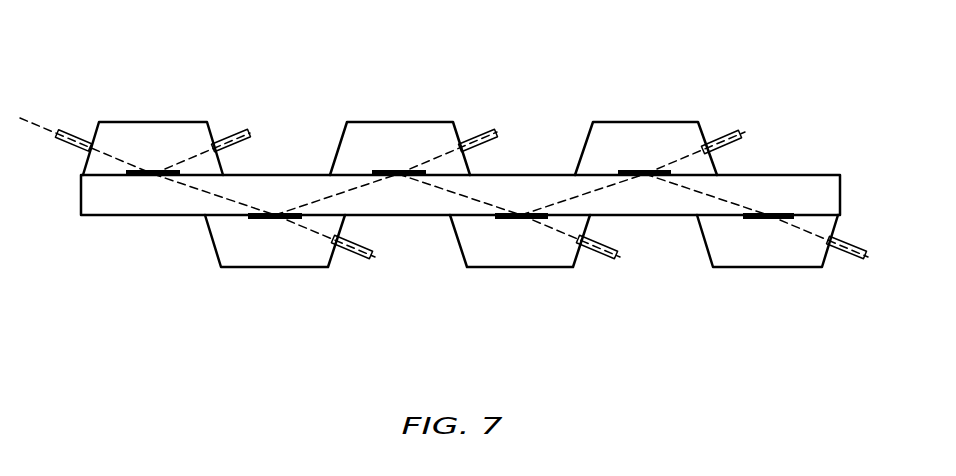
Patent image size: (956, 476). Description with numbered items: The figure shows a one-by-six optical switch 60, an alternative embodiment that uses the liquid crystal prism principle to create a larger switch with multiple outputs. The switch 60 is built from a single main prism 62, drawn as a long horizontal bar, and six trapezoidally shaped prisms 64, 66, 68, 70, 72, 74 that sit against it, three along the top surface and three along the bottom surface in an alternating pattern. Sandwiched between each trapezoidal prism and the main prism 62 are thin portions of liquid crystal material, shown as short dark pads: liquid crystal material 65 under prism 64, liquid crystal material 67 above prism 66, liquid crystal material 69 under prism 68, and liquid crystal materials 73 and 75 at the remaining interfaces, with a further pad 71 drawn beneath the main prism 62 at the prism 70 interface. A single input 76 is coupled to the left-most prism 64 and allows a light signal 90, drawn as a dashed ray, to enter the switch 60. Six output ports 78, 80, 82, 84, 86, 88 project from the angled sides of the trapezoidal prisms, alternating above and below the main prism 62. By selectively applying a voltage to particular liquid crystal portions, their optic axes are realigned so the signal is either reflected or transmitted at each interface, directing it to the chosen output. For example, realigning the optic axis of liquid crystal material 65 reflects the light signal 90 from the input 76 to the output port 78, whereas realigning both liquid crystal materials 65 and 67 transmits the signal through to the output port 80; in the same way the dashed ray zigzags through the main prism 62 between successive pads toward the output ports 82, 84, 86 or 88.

The 1×6 switch 60 is at (366, 80).
The main prism 62 is at (840, 187).
The trapezoidally shaped prism 64 is at (155, 122).
The liquid crystal material 65 is at (152, 177).
The trapezoidally shaped prism 66 is at (245, 268).
The liquid crystal material 67 is at (270, 213).
The trapezoidally shaped prism 68 is at (417, 122).
The liquid crystal material 69 is at (400, 176).
The trapezoidally shaped prism 70 is at (497, 268).
The fourth reflective pad 71 is at (518, 213).
The trapezoidally shaped prism 72 is at (647, 122).
The liquid crystal material 73 is at (645, 177).
The trapezoidally shaped prism 74 is at (745, 268).
The liquid crystal material 75 is at (770, 212).
The input 76 is at (67, 148).
The output port 78 is at (247, 132).
The output port 80 is at (370, 257).
The output port 82 is at (492, 130).
The output port 84 is at (615, 257).
The output port 86 is at (740, 132).
The output port 88 is at (862, 257).
The light signal 90 is at (45, 128).